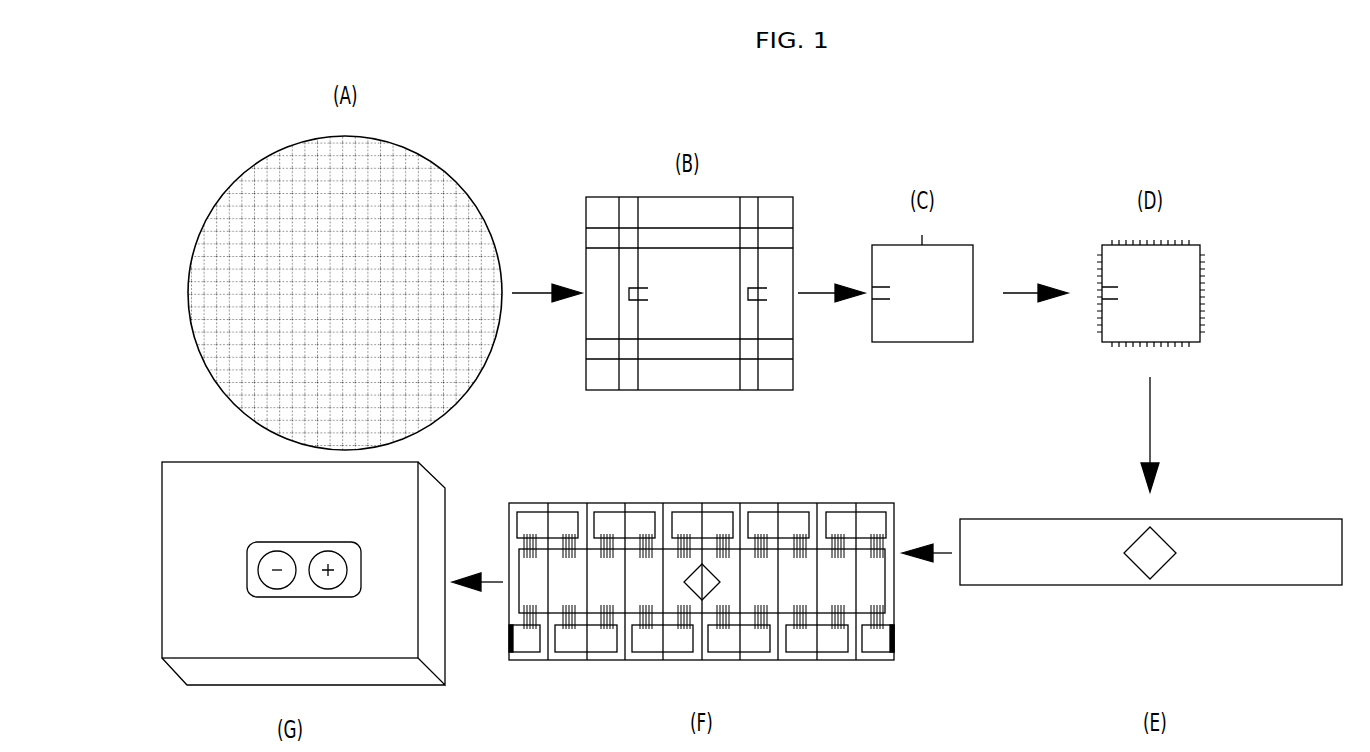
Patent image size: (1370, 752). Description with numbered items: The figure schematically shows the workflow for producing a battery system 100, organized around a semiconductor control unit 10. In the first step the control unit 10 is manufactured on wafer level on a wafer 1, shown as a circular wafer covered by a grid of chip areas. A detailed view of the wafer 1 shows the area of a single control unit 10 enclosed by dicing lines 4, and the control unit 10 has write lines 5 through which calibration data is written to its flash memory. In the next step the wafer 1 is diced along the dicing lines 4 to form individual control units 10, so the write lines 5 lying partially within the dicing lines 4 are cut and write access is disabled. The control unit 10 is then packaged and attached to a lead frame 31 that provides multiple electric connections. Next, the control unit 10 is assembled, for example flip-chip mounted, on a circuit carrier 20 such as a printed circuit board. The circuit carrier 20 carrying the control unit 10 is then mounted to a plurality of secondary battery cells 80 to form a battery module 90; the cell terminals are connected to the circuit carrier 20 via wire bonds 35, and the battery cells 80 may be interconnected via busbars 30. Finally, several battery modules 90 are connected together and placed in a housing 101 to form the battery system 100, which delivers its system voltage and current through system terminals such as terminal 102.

The wafer 1 is at (460, 185).
The dicing lines 4 is at (586, 234).
The write lines 5 is at (648, 297).
The control unit 10 is at (715, 296).
The lead frame 31 is at (1207, 295).
The circuit carrier 20 is at (1038, 519).
The secondary battery cells 80 is at (874, 503).
The busbars 30 is at (803, 652).
The wire bonds 35 is at (612, 618).
The battery module 90 is at (893, 632).
The battery system 100 is at (432, 470).
The housing 101 is at (263, 589).
The system terminal 102 is at (343, 592).